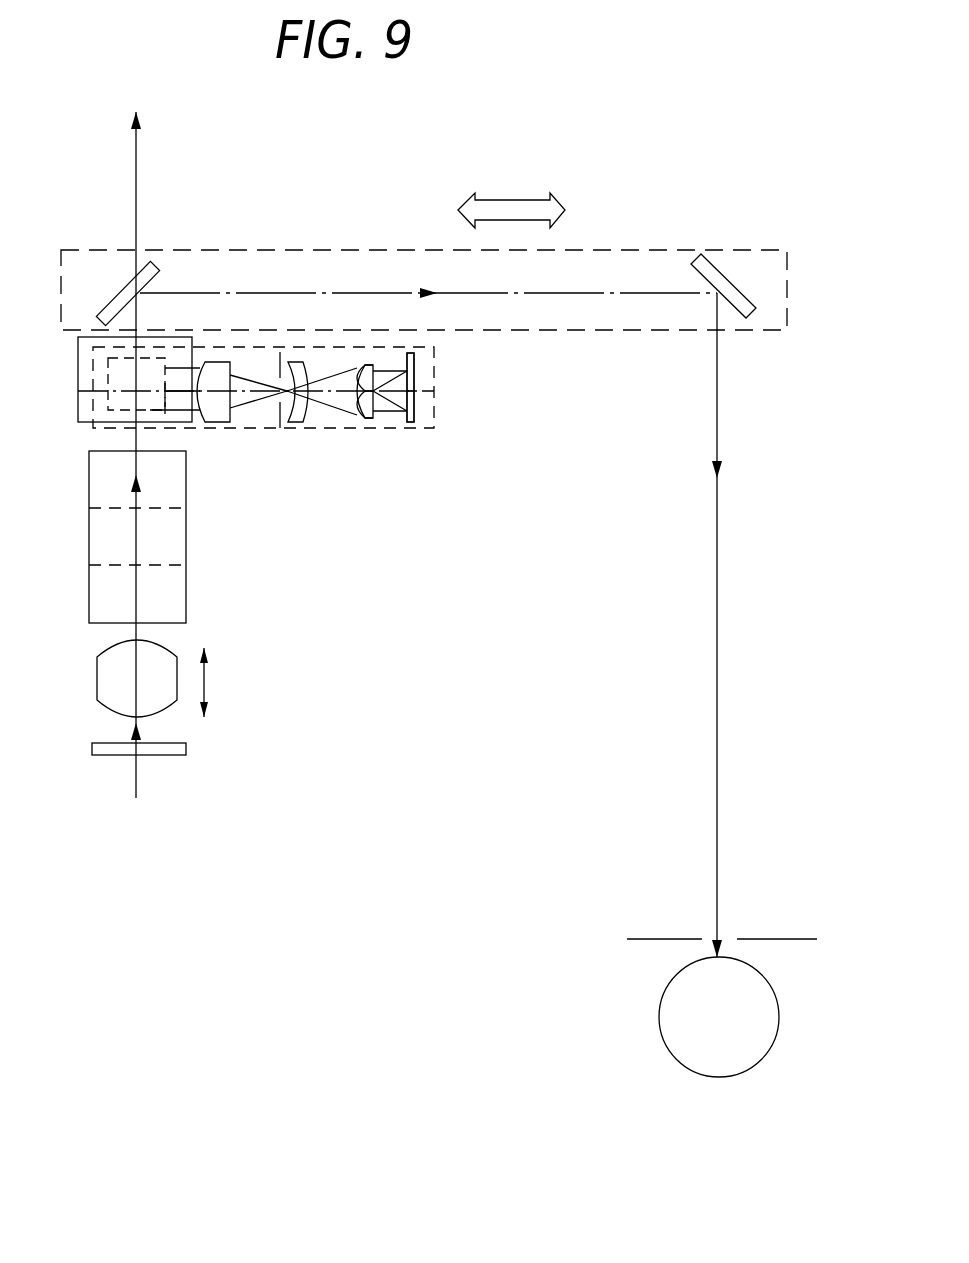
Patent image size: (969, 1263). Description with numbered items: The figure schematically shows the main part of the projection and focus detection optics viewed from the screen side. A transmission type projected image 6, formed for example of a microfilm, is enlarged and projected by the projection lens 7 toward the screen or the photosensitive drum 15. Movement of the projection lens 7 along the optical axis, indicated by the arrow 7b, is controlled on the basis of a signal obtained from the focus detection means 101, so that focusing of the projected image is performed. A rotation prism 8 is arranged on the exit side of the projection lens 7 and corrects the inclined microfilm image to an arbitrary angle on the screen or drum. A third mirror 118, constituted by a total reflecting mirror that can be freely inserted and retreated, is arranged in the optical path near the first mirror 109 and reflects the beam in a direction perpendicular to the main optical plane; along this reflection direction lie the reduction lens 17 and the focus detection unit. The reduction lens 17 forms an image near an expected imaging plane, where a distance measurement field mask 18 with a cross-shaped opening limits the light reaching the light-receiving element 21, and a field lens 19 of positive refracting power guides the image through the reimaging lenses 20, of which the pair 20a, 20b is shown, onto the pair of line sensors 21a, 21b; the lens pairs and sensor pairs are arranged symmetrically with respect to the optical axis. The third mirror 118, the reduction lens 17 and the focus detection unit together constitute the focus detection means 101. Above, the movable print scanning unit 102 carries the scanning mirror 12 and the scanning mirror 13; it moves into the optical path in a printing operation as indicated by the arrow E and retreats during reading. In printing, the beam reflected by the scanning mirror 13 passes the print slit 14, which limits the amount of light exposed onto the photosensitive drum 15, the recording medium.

The transmission type projected image 6 is at (92, 748).
The projection lens 7 is at (97, 665).
The arrow indicating movement of the projection lens 7b is at (205, 678).
The rotation prism 8 is at (89, 545).
The scanning mirror 12 is at (111, 300).
The scanning mirror 13 is at (738, 292).
The print slit 14 is at (770, 938).
The photosensitive drum 15 is at (777, 997).
The reduction lens 17 is at (220, 427).
The distance measurement field mask 18 is at (278, 402).
The field lens 19 is at (302, 425).
The reimaging lenses 20 is at (364, 365).
The reimaging lens 20a is at (360, 420).
The reimaging lens 20b is at (378, 418).
The light-receiving element 21 is at (410, 353).
The line sensor 21a is at (415, 370).
The line sensor 21b is at (413, 418).
The focus detection means 101 is at (434, 406).
The movable print scanning unit 102 is at (620, 249).
The first mirror 109 is at (78, 368).
The third mirror 118 is at (108, 408).
The arrow indicating movement of the print scanning unit E is at (500, 200).